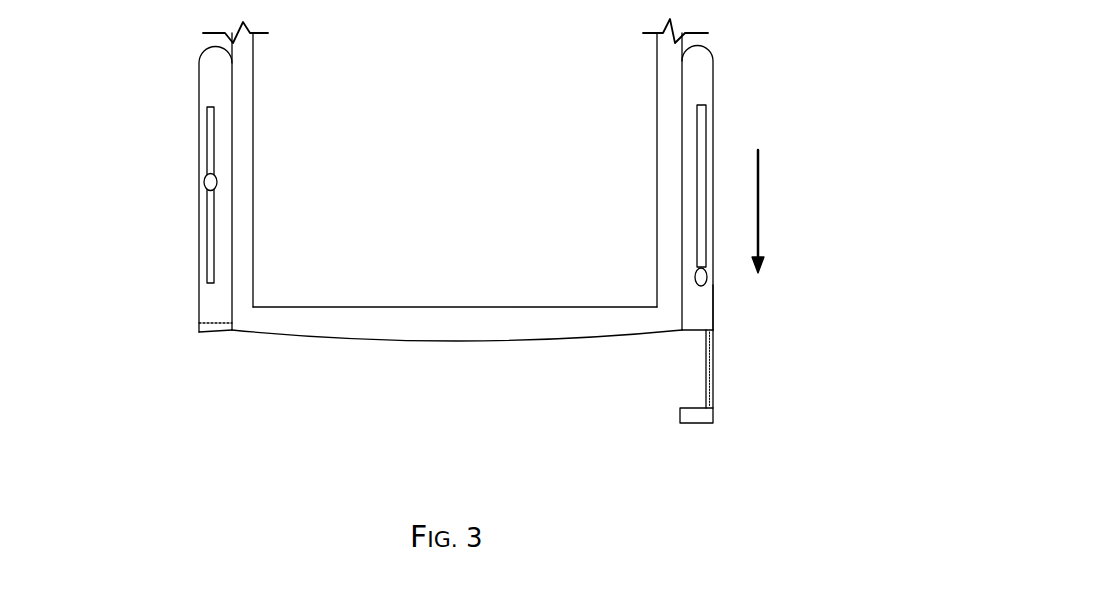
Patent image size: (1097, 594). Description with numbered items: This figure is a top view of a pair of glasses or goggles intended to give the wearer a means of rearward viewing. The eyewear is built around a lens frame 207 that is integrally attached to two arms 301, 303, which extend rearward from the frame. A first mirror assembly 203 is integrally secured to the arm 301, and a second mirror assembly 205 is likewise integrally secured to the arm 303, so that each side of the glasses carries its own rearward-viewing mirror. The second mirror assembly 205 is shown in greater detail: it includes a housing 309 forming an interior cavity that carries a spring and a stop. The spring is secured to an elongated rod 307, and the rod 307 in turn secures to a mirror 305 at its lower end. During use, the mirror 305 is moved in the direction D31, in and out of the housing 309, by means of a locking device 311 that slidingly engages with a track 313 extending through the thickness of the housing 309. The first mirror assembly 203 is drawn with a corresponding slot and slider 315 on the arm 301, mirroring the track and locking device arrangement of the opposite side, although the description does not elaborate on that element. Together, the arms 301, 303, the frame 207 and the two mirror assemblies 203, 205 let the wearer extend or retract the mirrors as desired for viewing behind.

The first mirror assembly 203 is at (135, 113).
The second mirror assembly 205 is at (750, 125).
The lens frame 207 is at (370, 338).
The arm 301 is at (253, 123).
The arm 303 is at (657, 153).
The mirror 305 is at (713, 423).
The elongated rod 307 is at (713, 368).
The housing 309 is at (713, 298).
The locking device 311 is at (707, 279).
The track 313 is at (697, 207).
The first slot and pin 315 is at (210, 195).
The direction D31 is at (758, 208).